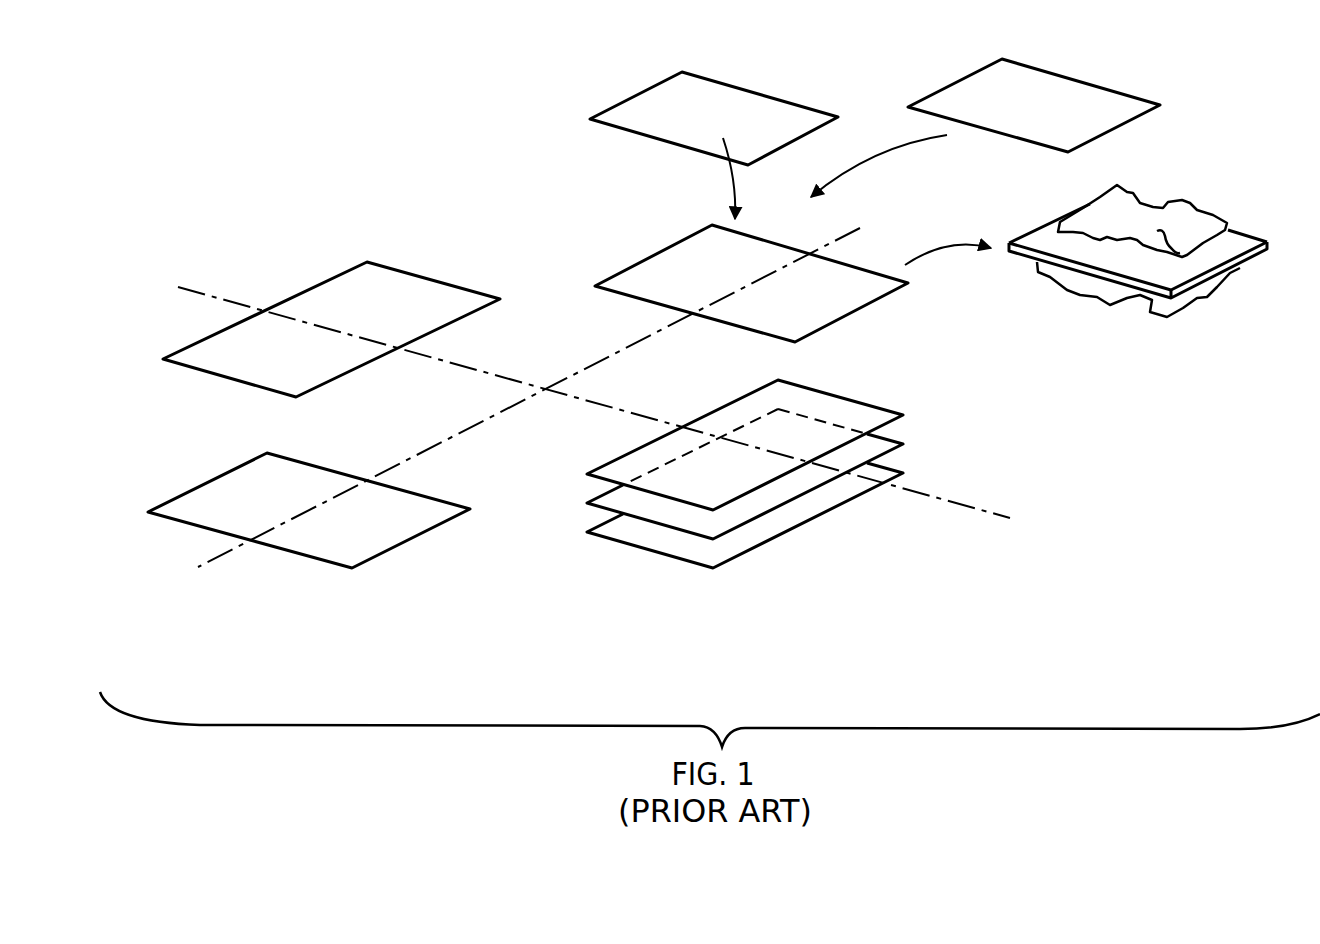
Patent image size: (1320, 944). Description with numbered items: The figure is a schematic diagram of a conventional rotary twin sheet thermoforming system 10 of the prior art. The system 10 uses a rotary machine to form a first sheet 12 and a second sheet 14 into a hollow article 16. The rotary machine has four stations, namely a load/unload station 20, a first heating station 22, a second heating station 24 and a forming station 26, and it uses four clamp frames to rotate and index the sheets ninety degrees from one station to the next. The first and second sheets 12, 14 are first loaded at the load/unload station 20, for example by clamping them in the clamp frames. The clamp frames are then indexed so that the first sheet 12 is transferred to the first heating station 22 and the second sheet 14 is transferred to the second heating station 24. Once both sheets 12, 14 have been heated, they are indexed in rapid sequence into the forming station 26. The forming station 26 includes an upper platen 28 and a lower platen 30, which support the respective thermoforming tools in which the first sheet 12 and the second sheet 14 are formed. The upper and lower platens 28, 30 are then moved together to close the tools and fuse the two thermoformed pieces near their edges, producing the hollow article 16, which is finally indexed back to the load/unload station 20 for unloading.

The twin sheet thermoforming system 10 is at (414, 162).
The first sheet 12 is at (750, 90).
The second sheet 14 is at (1083, 82).
The hollow article 16 is at (1247, 233).
The load/unload station 20 is at (781, 311).
The first heating station 22 is at (281, 371).
The second heating station 24 is at (253, 506).
The forming station 26 is at (698, 486).
The upper platen 28 is at (883, 410).
The lower platen 30 is at (730, 561).